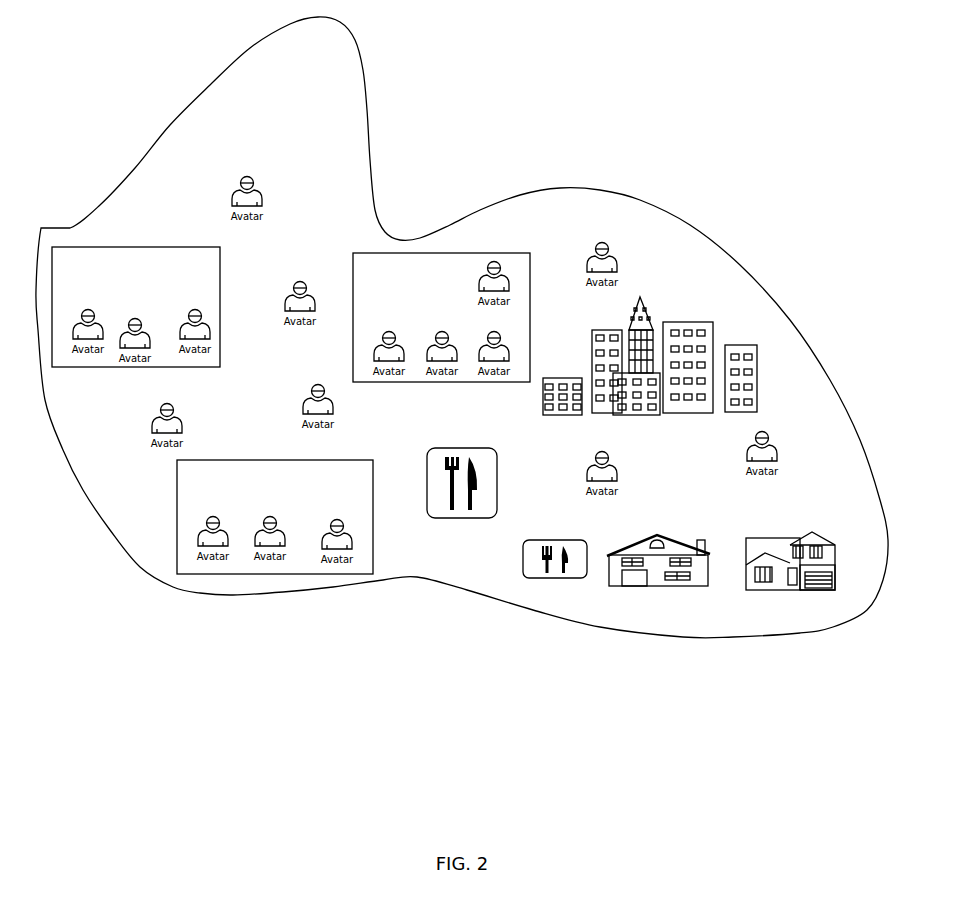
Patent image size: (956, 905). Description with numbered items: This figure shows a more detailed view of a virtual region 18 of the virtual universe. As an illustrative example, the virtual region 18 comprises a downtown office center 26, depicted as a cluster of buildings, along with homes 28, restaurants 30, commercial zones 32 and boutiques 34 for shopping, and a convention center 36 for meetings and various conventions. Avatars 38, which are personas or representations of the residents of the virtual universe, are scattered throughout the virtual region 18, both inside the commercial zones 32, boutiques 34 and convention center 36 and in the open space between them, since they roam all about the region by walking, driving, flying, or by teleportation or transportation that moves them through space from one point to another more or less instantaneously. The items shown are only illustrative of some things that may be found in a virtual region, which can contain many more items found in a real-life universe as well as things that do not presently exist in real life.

The virtual region 18 is at (368, 70).
The downtown office center 26 is at (707, 316).
The homes 28 is at (667, 587).
The restaurants 30 is at (497, 487).
The commercial zones 32 is at (136, 246).
The boutiques 34 is at (176, 517).
The convention center 36 is at (430, 383).
The avatars 38 is at (264, 190).